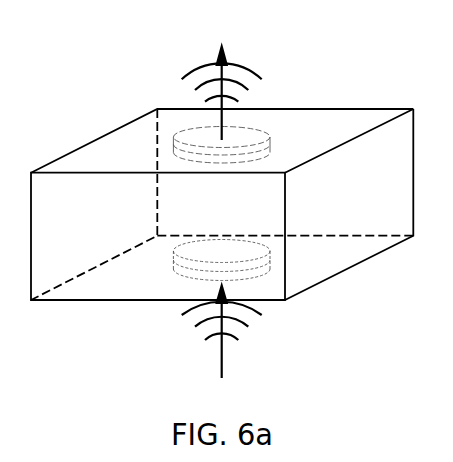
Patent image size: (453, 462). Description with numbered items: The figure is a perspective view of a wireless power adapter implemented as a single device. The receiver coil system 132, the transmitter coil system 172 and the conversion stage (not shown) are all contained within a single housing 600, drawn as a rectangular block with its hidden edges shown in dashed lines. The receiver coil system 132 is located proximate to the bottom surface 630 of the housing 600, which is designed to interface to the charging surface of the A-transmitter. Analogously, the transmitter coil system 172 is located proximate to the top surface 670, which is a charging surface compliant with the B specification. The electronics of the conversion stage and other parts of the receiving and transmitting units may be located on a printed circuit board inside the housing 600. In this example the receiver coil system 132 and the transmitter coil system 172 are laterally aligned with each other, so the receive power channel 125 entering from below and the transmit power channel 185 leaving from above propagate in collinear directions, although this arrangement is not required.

The housing 600 is at (242, 193).
The top surface 670 is at (325, 128).
The bottom surface 630 is at (325, 260).
The transmitter coil system 172 is at (182, 137).
The receiver coil system 132 is at (178, 268).
The transmit power channel 185 is at (222, 79).
The receive power channel 125 is at (222, 347).